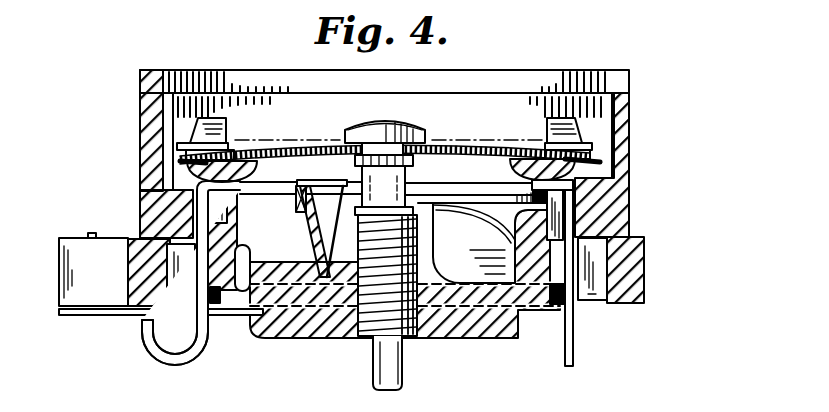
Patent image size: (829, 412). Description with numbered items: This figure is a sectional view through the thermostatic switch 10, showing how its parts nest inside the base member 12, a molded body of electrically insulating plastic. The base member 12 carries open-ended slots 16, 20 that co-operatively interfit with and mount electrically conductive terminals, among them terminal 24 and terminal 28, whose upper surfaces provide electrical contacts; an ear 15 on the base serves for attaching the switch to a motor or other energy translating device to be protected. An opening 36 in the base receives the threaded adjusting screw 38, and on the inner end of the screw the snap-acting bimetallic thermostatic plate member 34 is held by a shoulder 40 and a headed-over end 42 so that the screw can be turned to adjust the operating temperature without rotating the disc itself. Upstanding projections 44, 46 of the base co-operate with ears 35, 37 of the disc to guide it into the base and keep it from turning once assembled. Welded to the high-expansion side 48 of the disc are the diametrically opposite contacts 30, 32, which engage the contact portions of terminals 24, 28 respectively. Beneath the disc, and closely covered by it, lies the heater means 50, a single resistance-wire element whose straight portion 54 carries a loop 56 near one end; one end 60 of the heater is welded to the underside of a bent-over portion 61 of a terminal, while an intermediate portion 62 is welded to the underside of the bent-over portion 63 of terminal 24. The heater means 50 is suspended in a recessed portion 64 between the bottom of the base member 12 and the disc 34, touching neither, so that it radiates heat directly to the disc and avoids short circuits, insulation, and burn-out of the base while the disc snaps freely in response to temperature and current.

The thermostatic switch 10 is at (664, 102).
The base member 12 is at (150, 118).
The ear 15 is at (76, 262).
The open-ended slot 16 is at (592, 204).
The open-ended slot 20 is at (196, 205).
The terminal 24 is at (579, 233).
The terminal 28 is at (200, 228).
The contact 30 is at (583, 176).
The contact 32 is at (187, 178).
The thermostatic plate member 34 is at (453, 150).
The ear 35 is at (183, 162).
The opening 36 is at (428, 272).
The ear 37 is at (591, 160).
The adjusting screw 38 is at (418, 236).
The shoulder 40 is at (376, 156).
The headed-over end 42 is at (411, 130).
The upstanding projection 44 is at (226, 133).
The upstanding projection 46 is at (547, 131).
The high-expansion side 48 is at (308, 158).
The heater means 50 is at (457, 187).
The straight portion 54 is at (487, 193).
The loop 56 is at (316, 240).
The end of heater element 60 is at (293, 202).
The bent-over portion 61 is at (305, 183).
The intermediate portion 62 is at (545, 206).
The bent-over portion 63 is at (575, 181).
The recessed portion 64 is at (256, 300).